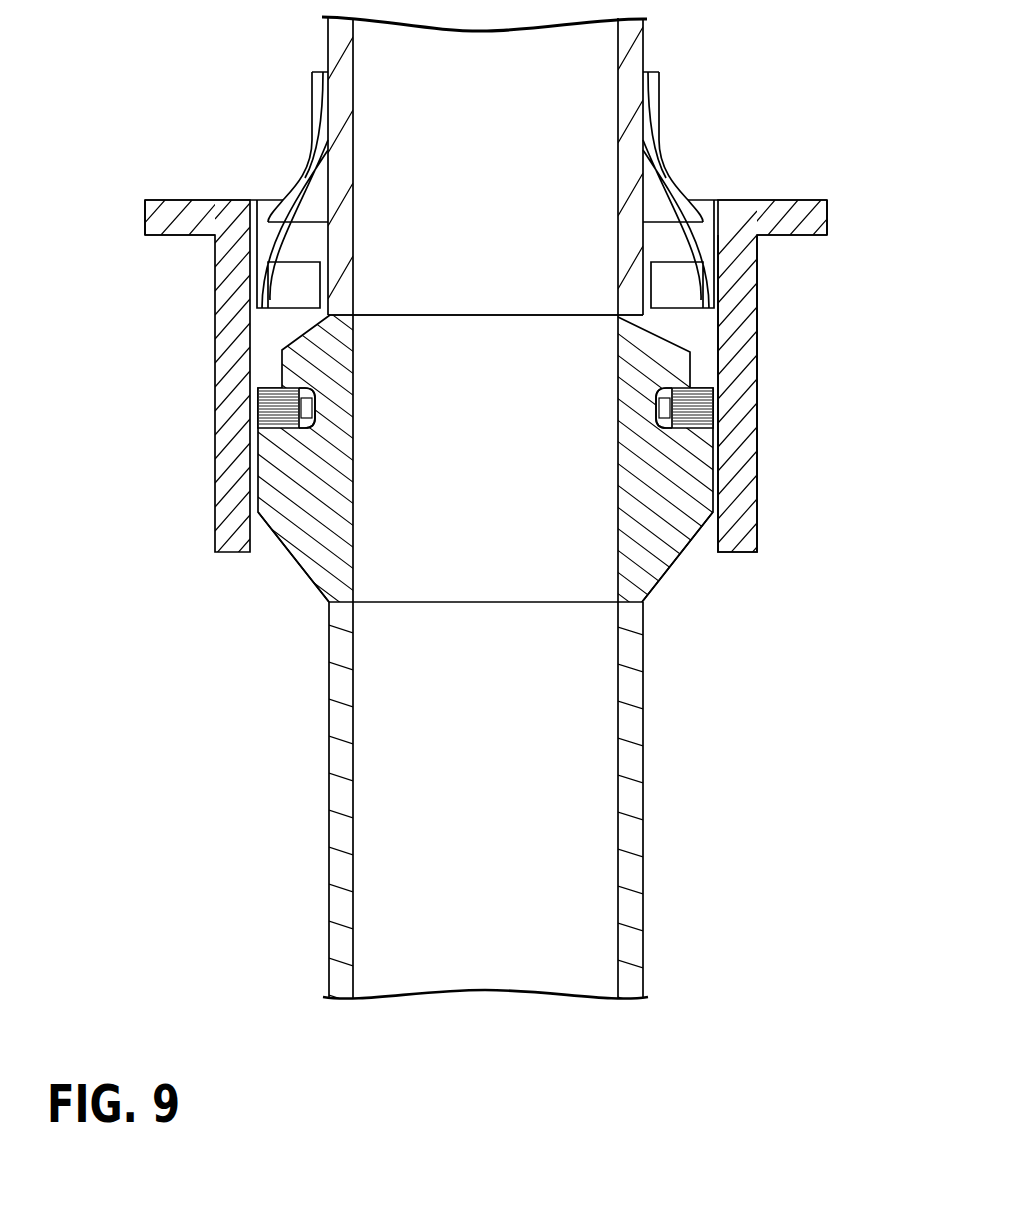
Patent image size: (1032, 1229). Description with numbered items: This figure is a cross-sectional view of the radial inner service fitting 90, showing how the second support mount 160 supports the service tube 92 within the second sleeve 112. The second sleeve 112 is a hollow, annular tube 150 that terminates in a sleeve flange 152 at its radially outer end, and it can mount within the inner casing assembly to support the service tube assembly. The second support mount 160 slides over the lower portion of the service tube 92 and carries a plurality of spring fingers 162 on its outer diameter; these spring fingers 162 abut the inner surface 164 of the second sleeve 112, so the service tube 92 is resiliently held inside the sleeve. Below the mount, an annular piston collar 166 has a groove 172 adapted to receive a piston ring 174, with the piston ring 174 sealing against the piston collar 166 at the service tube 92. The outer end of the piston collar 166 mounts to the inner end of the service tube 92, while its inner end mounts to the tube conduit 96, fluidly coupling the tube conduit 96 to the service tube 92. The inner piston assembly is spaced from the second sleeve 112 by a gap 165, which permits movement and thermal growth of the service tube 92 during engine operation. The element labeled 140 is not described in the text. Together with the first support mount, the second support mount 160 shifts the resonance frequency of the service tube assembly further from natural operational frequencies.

The radial inner service fitting 90 is at (120, 148).
The service tube 92 is at (643, 53).
The tube conduit 96 is at (643, 756).
The second sleeve 112 is at (215, 382).
The seal assembly 140 is at (272, 468).
The hollow, annular tube 150 is at (758, 448).
The sleeve flange 152 is at (828, 218).
The second support mount 160 is at (667, 147).
The spring fingers 162 is at (300, 268).
The inner surface 164 is at (273, 335).
The gap 165 is at (716, 418).
The piston collar 166 is at (317, 553).
The groove 172 is at (312, 425).
The piston ring 174 is at (260, 403).